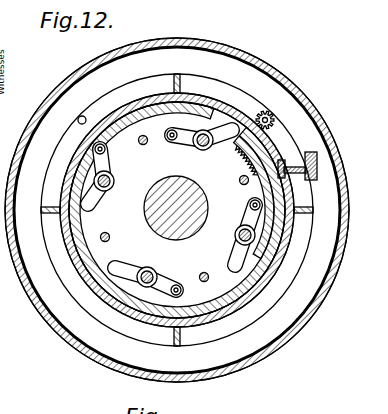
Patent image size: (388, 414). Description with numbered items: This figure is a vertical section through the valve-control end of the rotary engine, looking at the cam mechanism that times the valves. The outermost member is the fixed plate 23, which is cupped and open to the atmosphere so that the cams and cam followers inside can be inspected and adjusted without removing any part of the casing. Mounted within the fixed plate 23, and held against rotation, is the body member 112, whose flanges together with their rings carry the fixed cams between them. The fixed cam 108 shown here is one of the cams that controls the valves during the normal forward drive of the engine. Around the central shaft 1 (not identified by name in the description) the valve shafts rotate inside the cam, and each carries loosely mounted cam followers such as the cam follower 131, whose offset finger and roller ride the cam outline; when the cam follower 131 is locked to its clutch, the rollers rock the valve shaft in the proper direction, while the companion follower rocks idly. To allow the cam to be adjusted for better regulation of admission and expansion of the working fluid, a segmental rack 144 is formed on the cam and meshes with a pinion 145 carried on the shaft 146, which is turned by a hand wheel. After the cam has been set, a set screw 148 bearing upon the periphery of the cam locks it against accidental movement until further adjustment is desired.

The shaft 1 is at (202, 198).
The fixed plate 23 is at (52, 318).
The body member 112 is at (101, 302).
The fixed cam 108 is at (90, 263).
The cam follower 131 is at (103, 196).
The segmental rack 144 is at (274, 140).
The pinion 145 is at (268, 111).
The shaft 146 is at (276, 127).
The set screw 148 is at (318, 172).